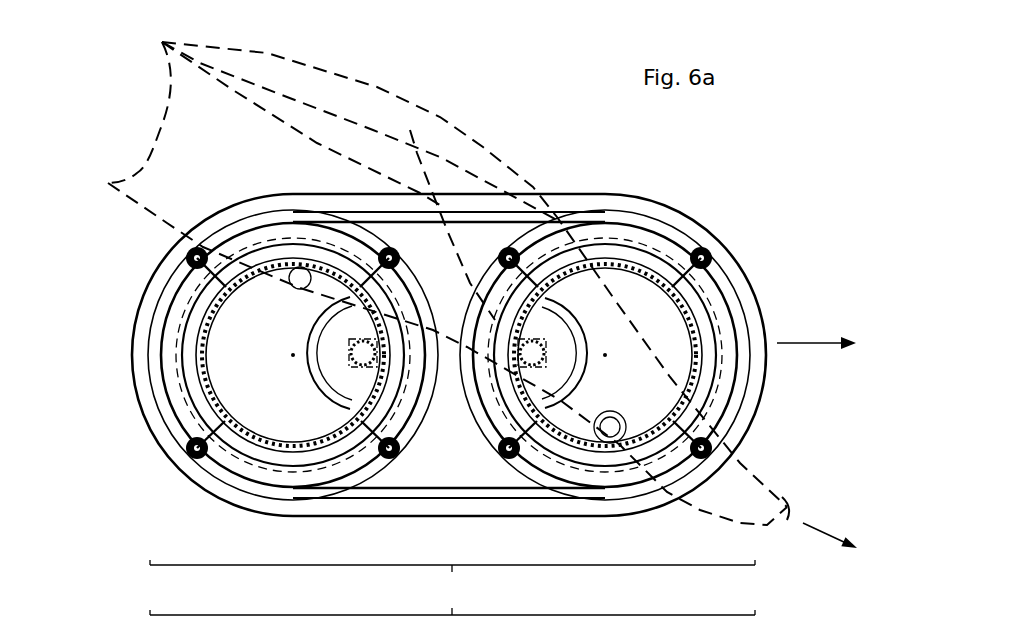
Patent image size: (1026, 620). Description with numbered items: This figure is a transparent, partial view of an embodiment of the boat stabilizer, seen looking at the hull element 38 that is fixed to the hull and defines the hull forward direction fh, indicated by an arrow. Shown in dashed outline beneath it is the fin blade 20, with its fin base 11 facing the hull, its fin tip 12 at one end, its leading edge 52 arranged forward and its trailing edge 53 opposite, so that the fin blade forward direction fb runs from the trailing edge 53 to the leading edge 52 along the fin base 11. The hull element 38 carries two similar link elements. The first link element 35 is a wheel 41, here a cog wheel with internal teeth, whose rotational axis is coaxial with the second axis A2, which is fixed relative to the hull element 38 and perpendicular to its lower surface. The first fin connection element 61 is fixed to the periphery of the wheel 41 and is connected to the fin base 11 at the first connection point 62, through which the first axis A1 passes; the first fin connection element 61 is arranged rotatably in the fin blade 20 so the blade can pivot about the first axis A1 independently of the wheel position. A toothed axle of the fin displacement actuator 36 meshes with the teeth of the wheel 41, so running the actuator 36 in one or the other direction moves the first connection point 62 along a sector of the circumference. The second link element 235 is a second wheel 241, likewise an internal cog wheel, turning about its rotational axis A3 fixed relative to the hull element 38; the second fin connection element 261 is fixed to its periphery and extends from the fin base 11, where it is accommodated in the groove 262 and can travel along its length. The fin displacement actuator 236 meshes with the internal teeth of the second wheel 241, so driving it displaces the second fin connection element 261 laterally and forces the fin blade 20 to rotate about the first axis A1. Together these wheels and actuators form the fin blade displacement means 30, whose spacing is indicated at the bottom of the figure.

The fin tip 12 is at (474, 264).
The trailing edge 53 is at (107, 138).
The second fin connection element 261 is at (401, 281).
The groove 262 is at (395, 291).
The second link element 235 is at (197, 352).
The second wheel 241 is at (406, 355).
The fin displacement actuator 236 is at (353, 395).
The fin displacement actuator 36 is at (572, 392).
The link element 35 is at (449, 275).
The wheel 41 is at (449, 275).
The hull element 38 is at (449, 325).
The second axis A2 is at (702, 268).
The first axis A1 is at (730, 327).
The first fin connection element 61 is at (730, 327).
The first connection point 62 is at (730, 327).
The rotational axis A3 is at (224, 393).
The fin base 11 is at (482, 354).
The fin blade 20 is at (482, 354).
The leading edge 52 is at (787, 517).
The fin blade displacement means 30 is at (452, 587).
The hull forward direction fh is at (816, 336).
The fin blade forward direction fb is at (830, 527).